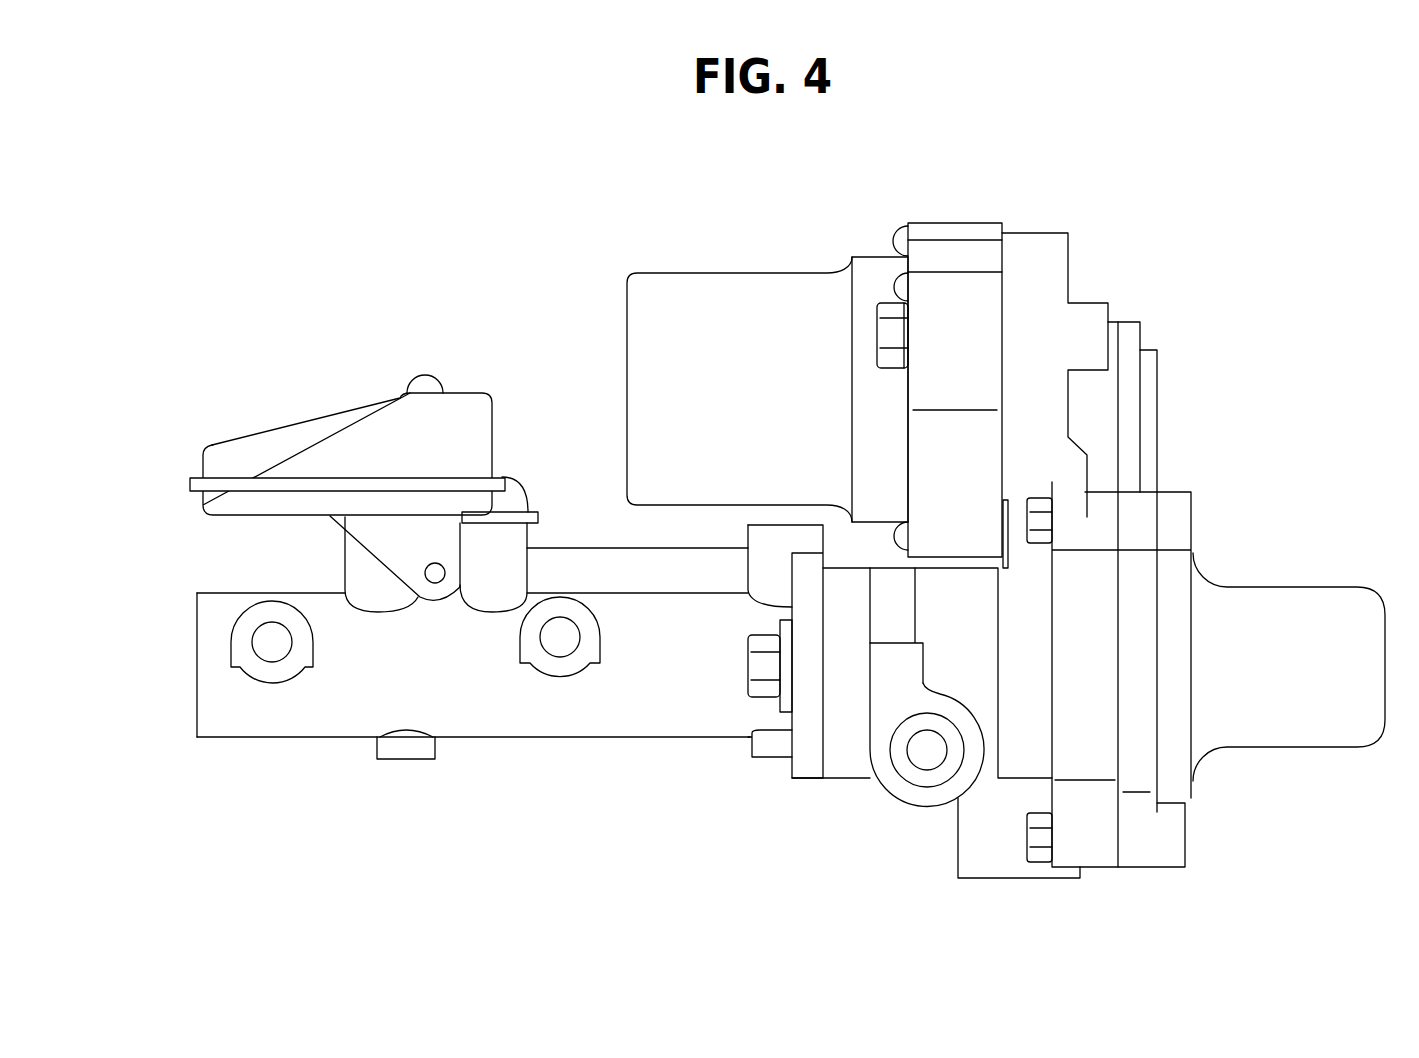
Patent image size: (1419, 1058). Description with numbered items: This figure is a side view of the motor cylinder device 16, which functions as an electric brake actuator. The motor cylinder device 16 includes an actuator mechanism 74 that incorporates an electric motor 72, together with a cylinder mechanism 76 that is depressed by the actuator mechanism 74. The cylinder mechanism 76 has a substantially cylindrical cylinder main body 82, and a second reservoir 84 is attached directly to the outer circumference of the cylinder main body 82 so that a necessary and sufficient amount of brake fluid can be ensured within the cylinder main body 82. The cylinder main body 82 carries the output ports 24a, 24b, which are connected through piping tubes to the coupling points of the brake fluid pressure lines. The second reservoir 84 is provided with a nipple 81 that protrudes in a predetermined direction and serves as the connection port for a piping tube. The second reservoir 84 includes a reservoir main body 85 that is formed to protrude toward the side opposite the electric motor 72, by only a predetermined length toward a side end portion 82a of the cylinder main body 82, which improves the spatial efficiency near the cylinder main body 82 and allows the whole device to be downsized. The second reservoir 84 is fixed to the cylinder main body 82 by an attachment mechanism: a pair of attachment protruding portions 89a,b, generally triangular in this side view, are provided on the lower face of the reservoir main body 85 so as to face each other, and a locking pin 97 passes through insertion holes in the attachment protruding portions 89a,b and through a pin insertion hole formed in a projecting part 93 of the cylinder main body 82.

The motor cylinder device 16 is at (1154, 208).
The electric motor 72 is at (737, 272).
The actuator mechanism 74 is at (1159, 410).
The cylinder mechanism 76 is at (320, 743).
The nipple 81 is at (428, 385).
The cylinder main body 82 is at (688, 713).
The side end portion 82a is at (197, 665).
The second reservoir 84 is at (271, 428).
The reservoir main body 85 is at (350, 410).
The projecting part 93 is at (355, 577).
The locking pin 97 is at (435, 583).
The attachment protruding portions 89a,b is at (393, 573).
The output port 24a is at (560, 645).
The output port 24b is at (270, 644).